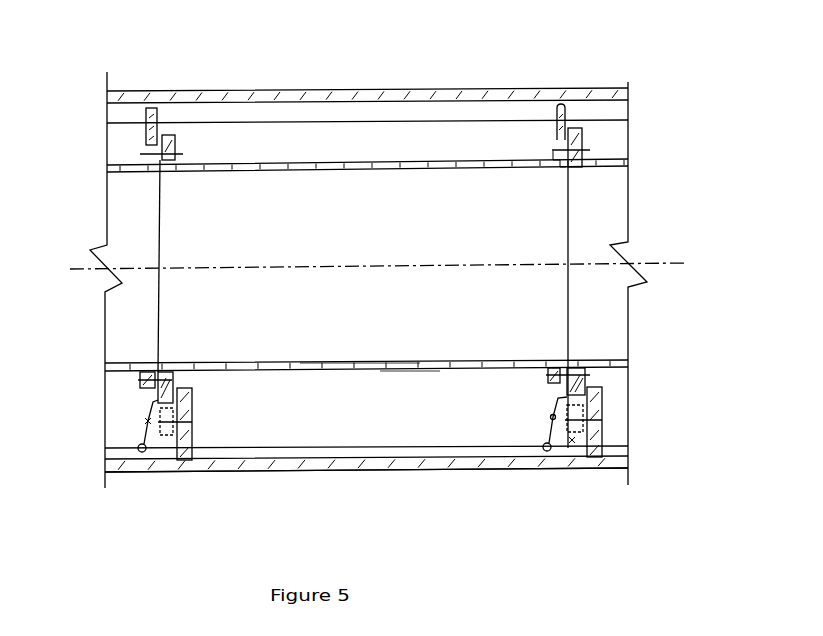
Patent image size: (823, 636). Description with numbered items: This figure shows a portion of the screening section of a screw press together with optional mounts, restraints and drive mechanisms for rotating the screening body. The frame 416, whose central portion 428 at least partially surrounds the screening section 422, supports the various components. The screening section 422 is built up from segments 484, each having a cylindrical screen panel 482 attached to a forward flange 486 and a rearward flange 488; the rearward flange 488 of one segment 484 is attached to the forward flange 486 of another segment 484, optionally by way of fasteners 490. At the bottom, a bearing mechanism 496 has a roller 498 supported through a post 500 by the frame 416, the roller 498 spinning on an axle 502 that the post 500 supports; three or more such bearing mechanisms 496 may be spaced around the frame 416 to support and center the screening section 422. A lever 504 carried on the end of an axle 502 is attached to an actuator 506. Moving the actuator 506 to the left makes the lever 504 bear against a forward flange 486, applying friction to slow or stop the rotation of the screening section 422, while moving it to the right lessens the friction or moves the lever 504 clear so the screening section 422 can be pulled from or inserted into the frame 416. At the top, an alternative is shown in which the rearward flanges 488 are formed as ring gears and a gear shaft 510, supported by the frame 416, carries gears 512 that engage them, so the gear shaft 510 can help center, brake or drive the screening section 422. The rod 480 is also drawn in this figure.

The frame 416 is at (498, 473).
The central portion 428 is at (498, 473).
The screening section 422 is at (290, 377).
The rod 480 is at (118, 373).
The screen panel 482 is at (377, 370).
The segment 484 is at (395, 370).
The forward flange 486 is at (170, 133).
The rearward flange 488 is at (552, 152).
The fastener 490 is at (585, 150).
The bearing mechanism 496 is at (568, 470).
The roller 498 is at (580, 428).
The post 500 is at (602, 403).
The axle 502 is at (156, 440).
The lever 504 is at (137, 433).
The actuator 506 is at (460, 447).
The gear shaft 510 is at (381, 127).
The gear 512 is at (566, 108).